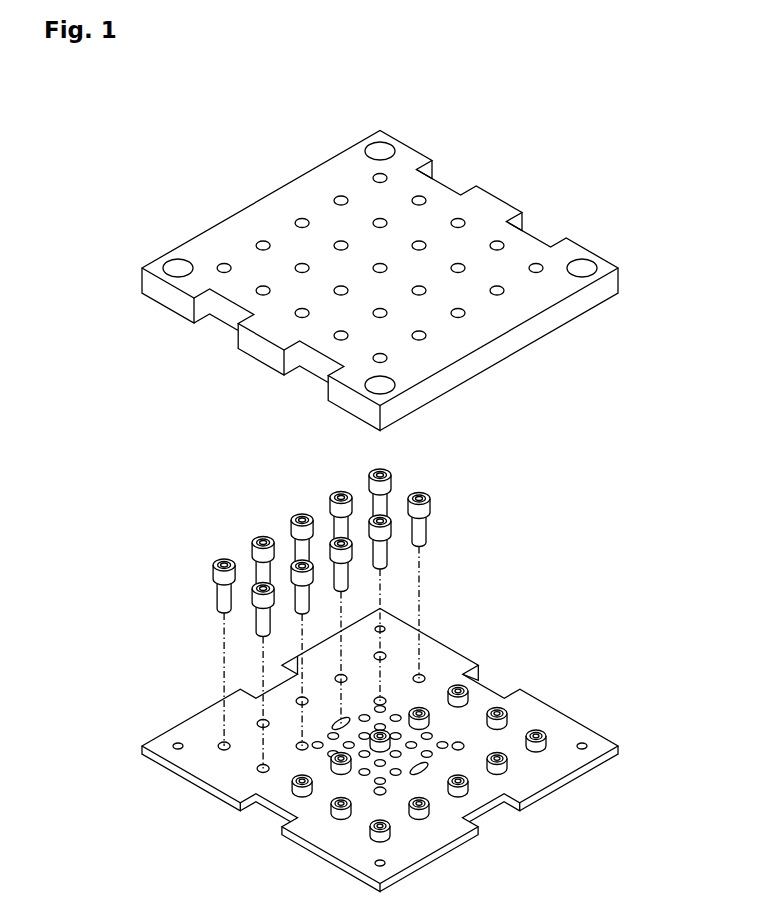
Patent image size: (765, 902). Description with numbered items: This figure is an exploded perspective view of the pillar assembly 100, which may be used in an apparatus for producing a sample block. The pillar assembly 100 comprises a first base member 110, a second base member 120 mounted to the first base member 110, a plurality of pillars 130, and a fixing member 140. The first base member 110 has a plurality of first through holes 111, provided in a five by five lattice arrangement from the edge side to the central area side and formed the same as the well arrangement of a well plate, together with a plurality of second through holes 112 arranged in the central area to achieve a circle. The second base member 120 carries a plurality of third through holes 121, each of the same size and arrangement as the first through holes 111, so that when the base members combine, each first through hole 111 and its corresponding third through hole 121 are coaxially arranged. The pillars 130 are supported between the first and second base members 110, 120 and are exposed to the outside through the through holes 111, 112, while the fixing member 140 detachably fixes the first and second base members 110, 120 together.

The pillar assembly 100 is at (107, 103).
The first base member 110 is at (430, 833).
The first through hole 111 is at (212, 742).
The second through hole 112 is at (460, 742).
The second base member 120 is at (228, 240).
The third through hole 121 is at (302, 219).
The pillar 130 is at (213, 567).
The fixing member 140 is at (581, 264).